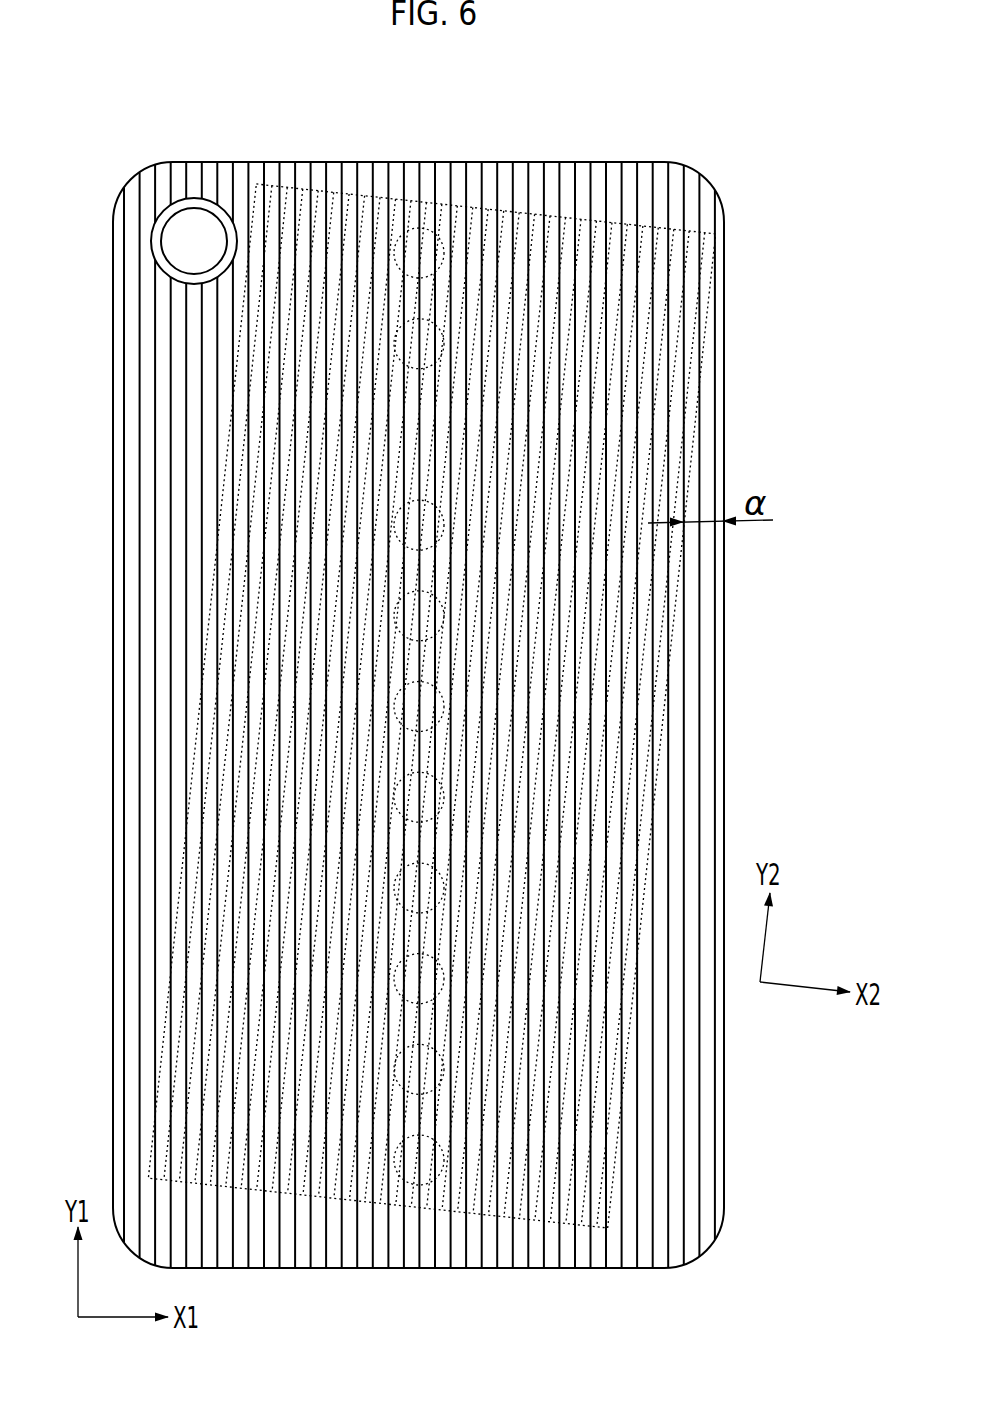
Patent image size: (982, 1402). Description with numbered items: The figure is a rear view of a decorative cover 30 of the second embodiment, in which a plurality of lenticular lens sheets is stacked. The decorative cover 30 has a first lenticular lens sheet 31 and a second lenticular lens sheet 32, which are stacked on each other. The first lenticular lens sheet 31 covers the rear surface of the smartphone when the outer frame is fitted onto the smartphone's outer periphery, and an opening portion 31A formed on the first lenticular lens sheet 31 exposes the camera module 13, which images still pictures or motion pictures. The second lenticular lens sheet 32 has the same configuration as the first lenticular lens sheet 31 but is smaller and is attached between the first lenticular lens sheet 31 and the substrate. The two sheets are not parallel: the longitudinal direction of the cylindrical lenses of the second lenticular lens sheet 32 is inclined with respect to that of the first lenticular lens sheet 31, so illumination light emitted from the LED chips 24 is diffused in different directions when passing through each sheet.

The camera module 13 is at (198, 217).
The LED chips 24 is at (464, 714).
The decorative cover 30 is at (418, 671).
The first lenticular lens sheet 31 is at (419, 690).
The opening portion 31A is at (152, 262).
The second lenticular lens sheet 32 is at (660, 745).